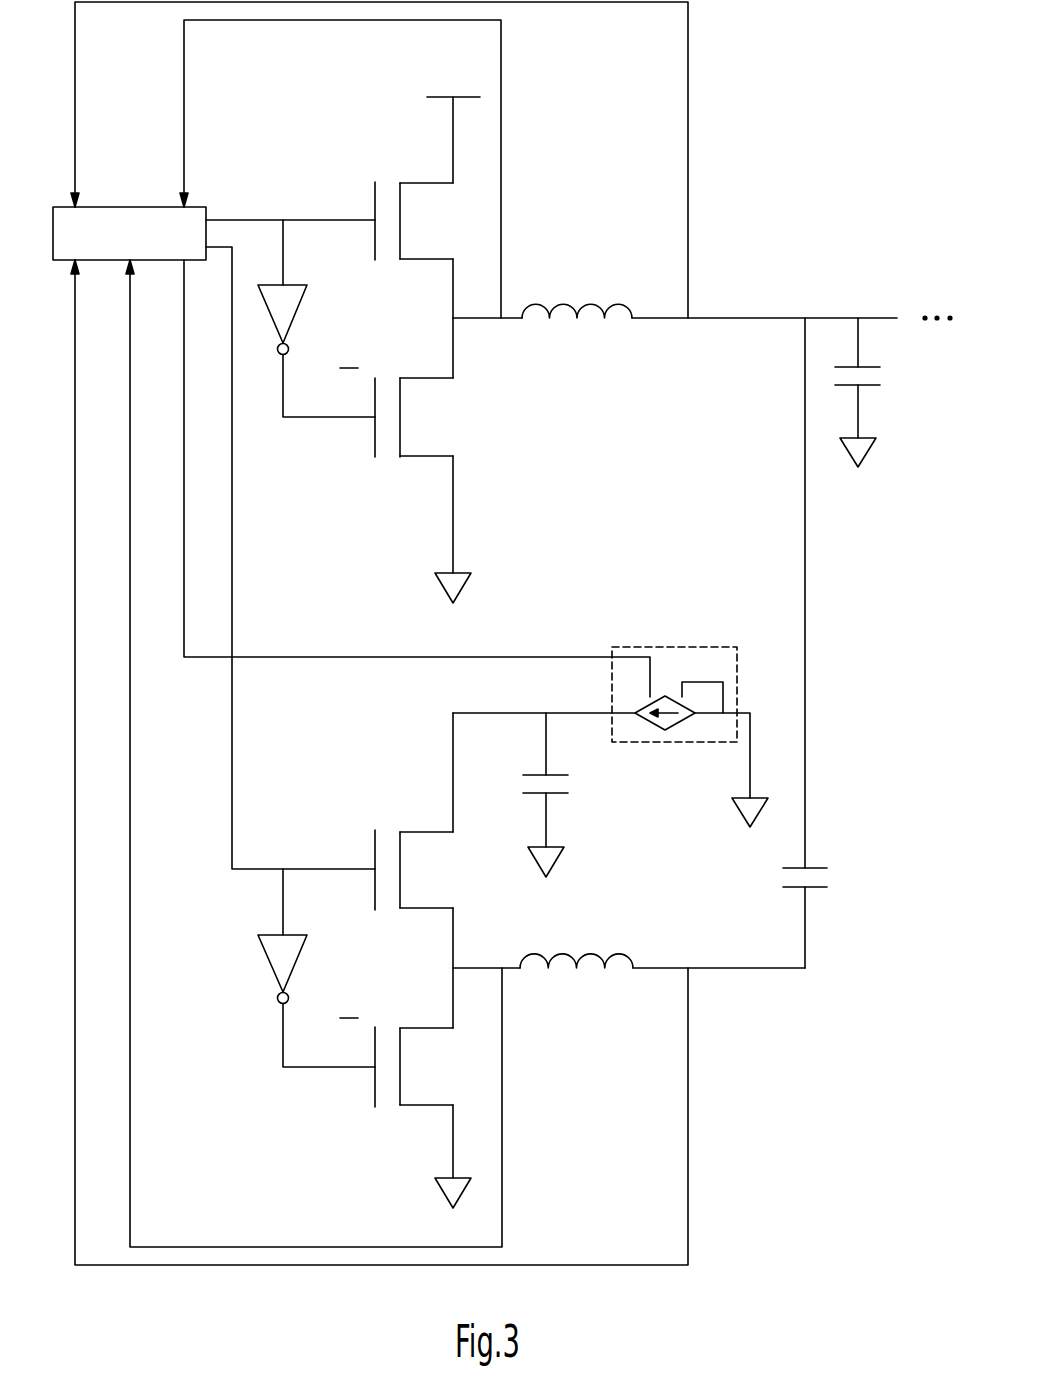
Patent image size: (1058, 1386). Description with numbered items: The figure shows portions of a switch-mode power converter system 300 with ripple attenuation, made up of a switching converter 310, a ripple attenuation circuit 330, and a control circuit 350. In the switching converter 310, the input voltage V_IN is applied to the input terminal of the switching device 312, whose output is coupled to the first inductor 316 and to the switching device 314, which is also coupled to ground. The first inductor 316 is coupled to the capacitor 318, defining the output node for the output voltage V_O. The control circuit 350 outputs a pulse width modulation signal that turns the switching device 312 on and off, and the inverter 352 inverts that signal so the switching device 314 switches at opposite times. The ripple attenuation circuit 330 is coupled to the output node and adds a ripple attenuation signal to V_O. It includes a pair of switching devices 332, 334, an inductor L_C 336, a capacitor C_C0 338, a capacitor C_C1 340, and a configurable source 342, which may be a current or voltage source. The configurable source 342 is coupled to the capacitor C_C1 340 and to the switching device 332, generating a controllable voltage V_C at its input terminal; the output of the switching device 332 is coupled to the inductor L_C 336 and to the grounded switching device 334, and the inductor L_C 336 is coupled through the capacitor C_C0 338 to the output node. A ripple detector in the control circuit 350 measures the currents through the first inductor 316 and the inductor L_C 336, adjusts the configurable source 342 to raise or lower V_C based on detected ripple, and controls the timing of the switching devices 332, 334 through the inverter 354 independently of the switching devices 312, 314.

The switch-mode power converter system 300 is at (845, 55).
The switching converter 310 is at (753, 212).
The switching device 312 is at (372, 248).
The switching device 314 is at (372, 447).
The inductor L1 316 is at (628, 306).
The capacitor 318 is at (884, 378).
The ripple attenuation circuit 330 is at (657, 580).
The switching device 332 is at (372, 897).
The switching device 334 is at (372, 1095).
The inductor L_C 336 is at (627, 958).
The capacitor C_C0 338 is at (778, 880).
The capacitor C_C1 340 is at (519, 785).
The configurable source 342 is at (676, 647).
The control circuit 350 is at (131, 206).
The inverter 352 is at (298, 312).
The inverter 354 is at (272, 966).